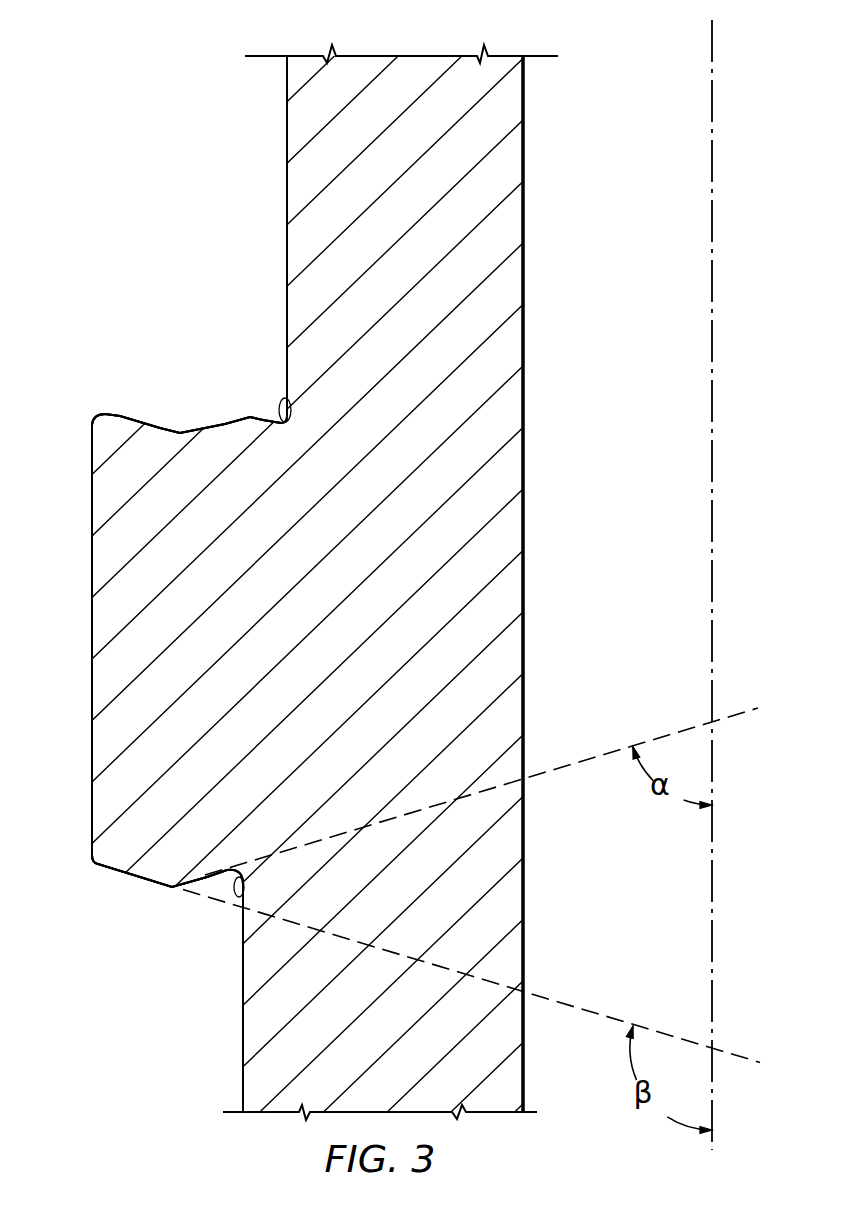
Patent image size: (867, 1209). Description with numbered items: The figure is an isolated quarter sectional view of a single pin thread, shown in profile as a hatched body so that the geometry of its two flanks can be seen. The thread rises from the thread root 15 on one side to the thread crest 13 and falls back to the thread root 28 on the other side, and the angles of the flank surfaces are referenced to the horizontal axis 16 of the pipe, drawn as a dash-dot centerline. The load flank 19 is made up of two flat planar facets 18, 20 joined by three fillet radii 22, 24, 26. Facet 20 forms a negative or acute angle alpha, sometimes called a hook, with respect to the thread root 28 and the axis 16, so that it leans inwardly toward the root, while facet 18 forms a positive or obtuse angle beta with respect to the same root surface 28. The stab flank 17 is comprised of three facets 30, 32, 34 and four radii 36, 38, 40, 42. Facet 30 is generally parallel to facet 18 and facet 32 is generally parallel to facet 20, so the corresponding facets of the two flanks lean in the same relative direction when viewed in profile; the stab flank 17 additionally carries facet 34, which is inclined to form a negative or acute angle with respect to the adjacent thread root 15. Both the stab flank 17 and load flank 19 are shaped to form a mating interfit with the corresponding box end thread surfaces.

The thread crest 13 is at (92, 622).
The thread root 15 is at (287, 196).
The horizontal axis of the pipe 16 is at (714, 948).
The stab flank 17 is at (143, 322).
The facet 18 is at (137, 877).
The load flank 19 is at (103, 961).
The facet 20 is at (212, 873).
The radius 22 is at (92, 860).
The radius 24 is at (172, 887).
The radius 26 is at (247, 898).
The thread root 28 is at (243, 1048).
The facet 30 is at (130, 419).
The facet 32 is at (220, 425).
The facet 34 is at (273, 421).
The radius 36 is at (95, 416).
The radius 38 is at (183, 432).
The radius 40 is at (250, 418).
The radius 42 is at (297, 400).